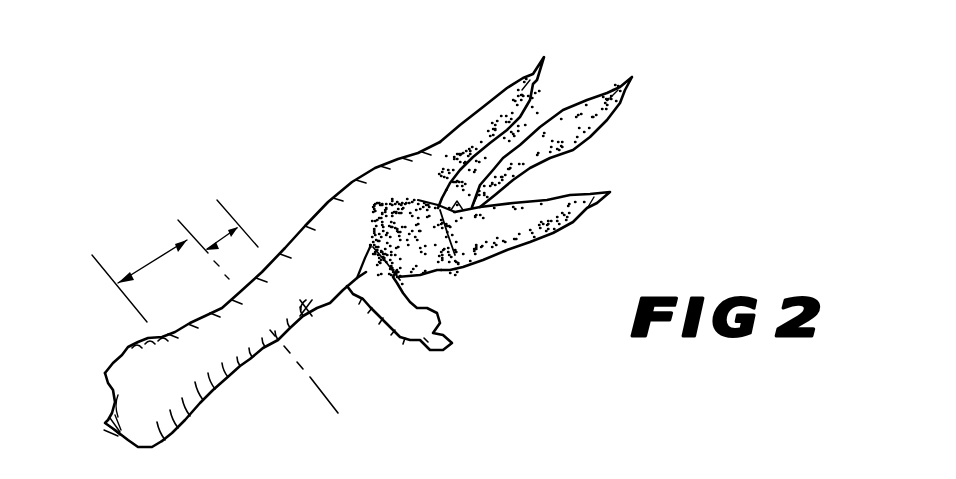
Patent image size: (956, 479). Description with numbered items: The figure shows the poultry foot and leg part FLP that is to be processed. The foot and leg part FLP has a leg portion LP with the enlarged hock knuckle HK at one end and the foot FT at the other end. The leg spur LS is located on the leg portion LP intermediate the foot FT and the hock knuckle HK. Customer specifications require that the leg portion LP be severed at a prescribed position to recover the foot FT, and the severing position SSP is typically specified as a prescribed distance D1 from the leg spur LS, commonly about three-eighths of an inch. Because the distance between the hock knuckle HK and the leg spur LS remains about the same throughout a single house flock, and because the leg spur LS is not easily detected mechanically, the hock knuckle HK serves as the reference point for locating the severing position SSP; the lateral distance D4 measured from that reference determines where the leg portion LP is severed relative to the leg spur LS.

The foot and leg part FLP is at (348, 156).
The leg portion LP is at (265, 344).
The hock knuckle HK is at (187, 424).
The leg spur LS is at (316, 306).
The spur separation plane SSP is at (338, 413).
The foot FT is at (456, 255).
The prescribed distance D1 is at (217, 238).
The lateral distance D4 is at (147, 265).